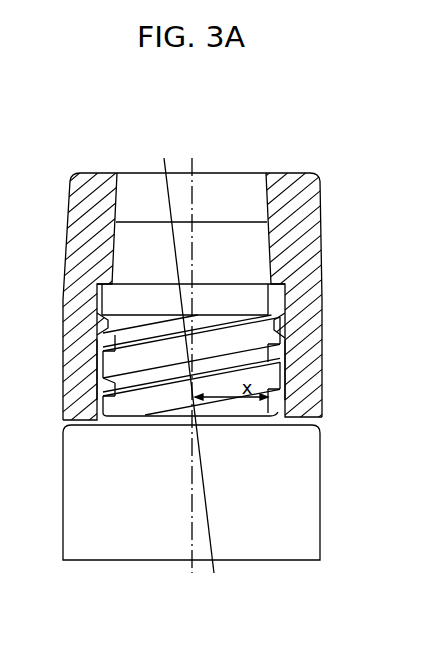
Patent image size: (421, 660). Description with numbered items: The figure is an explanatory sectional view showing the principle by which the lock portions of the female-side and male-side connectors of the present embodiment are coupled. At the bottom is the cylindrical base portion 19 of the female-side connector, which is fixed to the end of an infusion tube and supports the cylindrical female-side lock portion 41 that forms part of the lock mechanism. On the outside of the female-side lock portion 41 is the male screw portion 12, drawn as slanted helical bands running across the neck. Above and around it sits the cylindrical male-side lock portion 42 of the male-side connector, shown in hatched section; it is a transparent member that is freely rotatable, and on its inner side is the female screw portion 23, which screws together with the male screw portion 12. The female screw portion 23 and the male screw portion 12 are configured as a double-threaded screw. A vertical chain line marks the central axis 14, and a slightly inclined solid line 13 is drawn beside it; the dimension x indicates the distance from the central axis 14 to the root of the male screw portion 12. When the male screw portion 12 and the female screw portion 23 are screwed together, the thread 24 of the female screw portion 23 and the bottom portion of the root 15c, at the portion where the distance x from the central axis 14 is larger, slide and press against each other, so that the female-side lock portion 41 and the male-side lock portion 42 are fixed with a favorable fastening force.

The male screw portion 12 is at (276, 352).
The inclined line 13 is at (163, 168).
The central axis 14 is at (195, 166).
The root 15c is at (287, 400).
The base portion 19 is at (322, 517).
The female screw portion 23 is at (282, 332).
The thread 24 is at (281, 376).
The female-side lock portion 41 is at (268, 418).
The male-side lock portion 42 is at (318, 192).